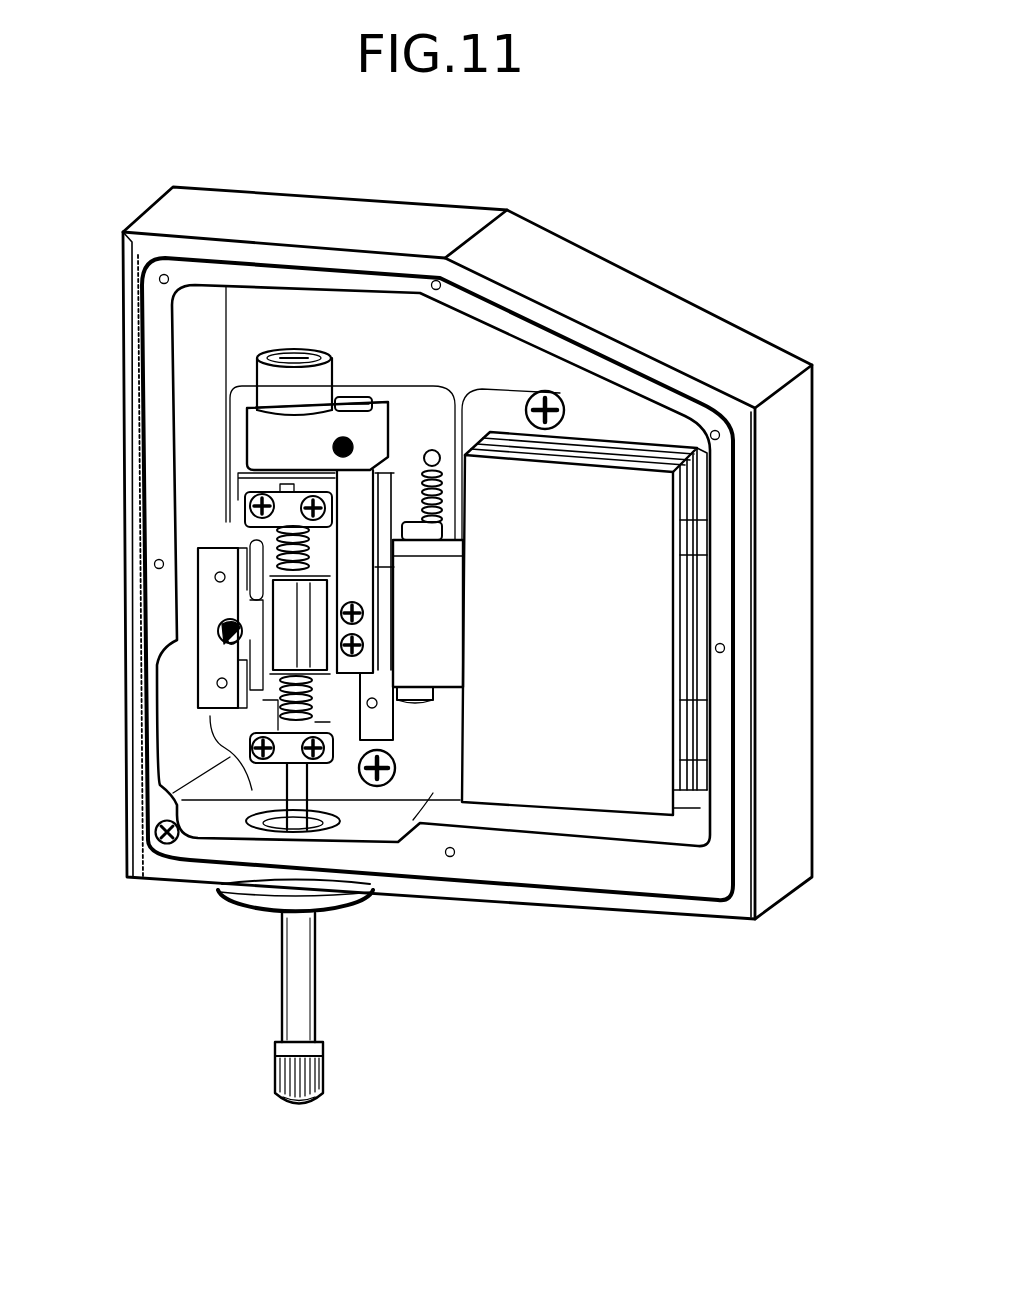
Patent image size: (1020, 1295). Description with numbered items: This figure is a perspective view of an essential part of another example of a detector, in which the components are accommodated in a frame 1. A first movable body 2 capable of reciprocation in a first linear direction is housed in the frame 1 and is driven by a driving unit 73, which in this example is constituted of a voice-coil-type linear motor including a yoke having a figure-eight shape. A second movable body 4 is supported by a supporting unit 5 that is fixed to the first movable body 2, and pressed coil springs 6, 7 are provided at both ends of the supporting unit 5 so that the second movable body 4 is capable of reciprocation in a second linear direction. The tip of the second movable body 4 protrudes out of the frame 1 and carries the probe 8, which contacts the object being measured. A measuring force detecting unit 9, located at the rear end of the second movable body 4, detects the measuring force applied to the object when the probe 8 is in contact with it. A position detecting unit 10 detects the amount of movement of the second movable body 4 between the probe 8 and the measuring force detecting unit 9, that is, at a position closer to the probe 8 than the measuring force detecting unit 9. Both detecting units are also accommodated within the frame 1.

The frame 1 is at (654, 292).
The first movable body 2 is at (417, 618).
The second movable body 4 is at (298, 796).
The supporting unit 5 is at (237, 597).
The pressed coil spring 6 is at (259, 717).
The pressed coil spring 7 is at (280, 539).
The probe 8 is at (313, 1062).
The measuring force detecting unit 9 is at (273, 393).
The position detecting unit 10 is at (223, 633).
The driving unit 73 is at (657, 590).